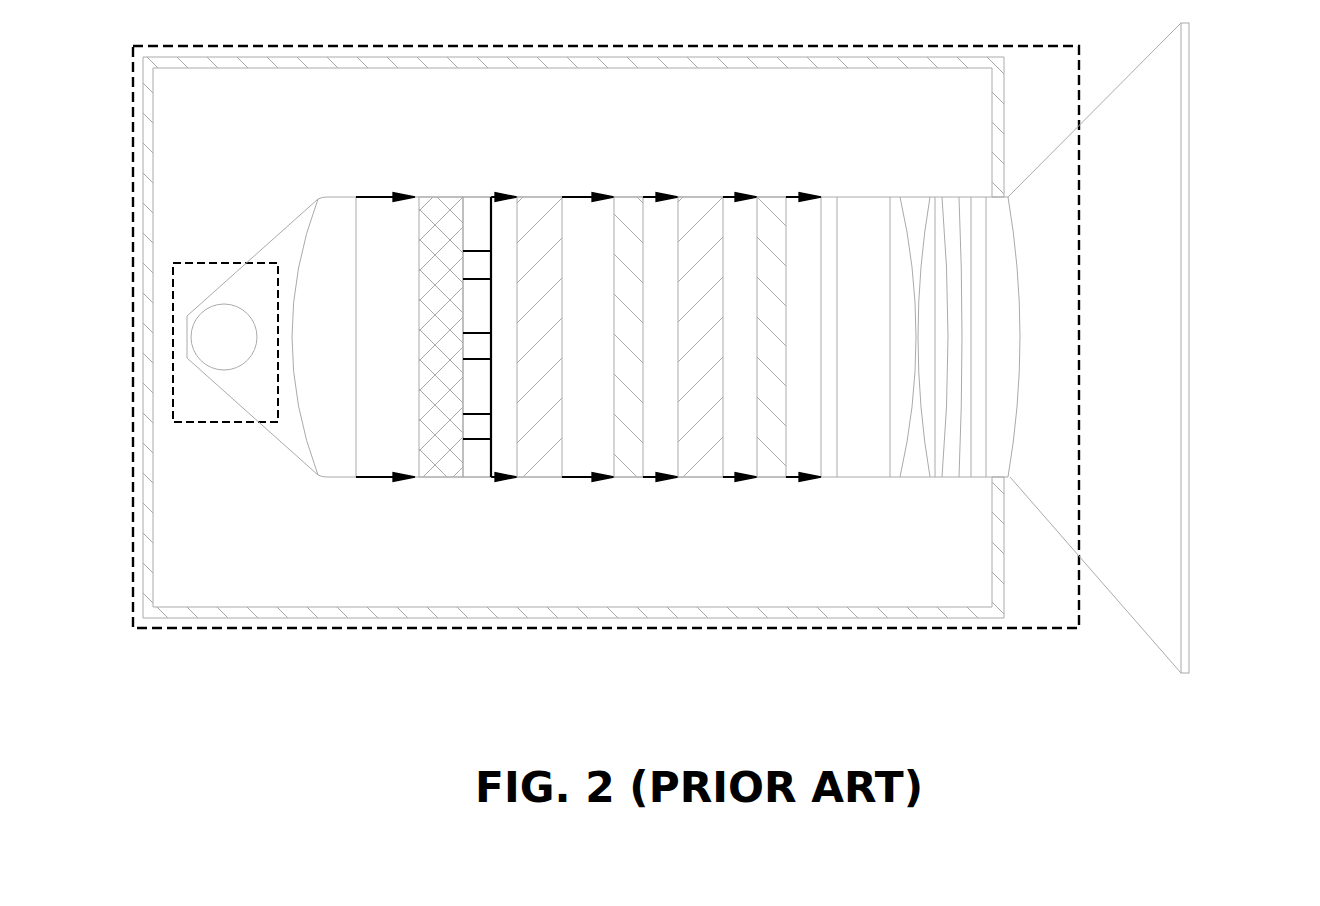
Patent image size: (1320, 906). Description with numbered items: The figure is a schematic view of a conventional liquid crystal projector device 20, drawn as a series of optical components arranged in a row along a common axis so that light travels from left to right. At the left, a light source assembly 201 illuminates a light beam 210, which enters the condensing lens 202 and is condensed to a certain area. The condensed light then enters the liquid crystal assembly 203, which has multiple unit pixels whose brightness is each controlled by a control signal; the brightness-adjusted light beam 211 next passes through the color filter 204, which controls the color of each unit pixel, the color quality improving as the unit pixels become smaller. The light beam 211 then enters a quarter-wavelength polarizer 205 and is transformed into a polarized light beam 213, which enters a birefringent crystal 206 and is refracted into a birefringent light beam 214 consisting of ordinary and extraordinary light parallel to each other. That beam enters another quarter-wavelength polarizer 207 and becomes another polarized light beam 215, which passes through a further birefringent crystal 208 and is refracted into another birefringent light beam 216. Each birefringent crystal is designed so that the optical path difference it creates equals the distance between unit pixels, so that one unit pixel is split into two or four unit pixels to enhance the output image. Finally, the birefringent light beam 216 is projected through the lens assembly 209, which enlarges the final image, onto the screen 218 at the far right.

The liquid crystal projector device 20 is at (285, 628).
The light source assembly 201 is at (213, 262).
The condensing lens 202 is at (332, 478).
The liquid crystal assembly 203 is at (441, 197).
The color filter 204 is at (471, 478).
The ¼ wavelength polarizer 205 is at (545, 478).
The birefringent crystal 206 is at (623, 197).
The ¼ wavelength polarizer 207 is at (695, 478).
The birefringent crystal 208 is at (770, 478).
The lens assembly 209 is at (908, 197).
The light beam 210 is at (275, 247).
The light beam 211 is at (372, 197).
The polarized light beam 213 is at (575, 197).
The birefringent light beam 214 is at (650, 197).
The polarized light beam 215 is at (730, 197).
The birefringent light beam 216 is at (790, 197).
The screen 218 is at (1185, 263).